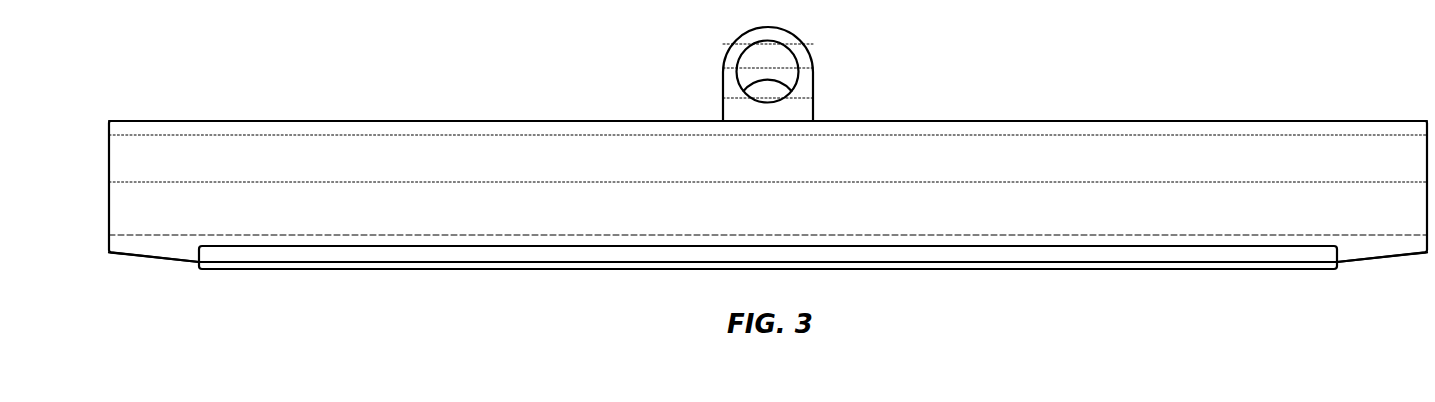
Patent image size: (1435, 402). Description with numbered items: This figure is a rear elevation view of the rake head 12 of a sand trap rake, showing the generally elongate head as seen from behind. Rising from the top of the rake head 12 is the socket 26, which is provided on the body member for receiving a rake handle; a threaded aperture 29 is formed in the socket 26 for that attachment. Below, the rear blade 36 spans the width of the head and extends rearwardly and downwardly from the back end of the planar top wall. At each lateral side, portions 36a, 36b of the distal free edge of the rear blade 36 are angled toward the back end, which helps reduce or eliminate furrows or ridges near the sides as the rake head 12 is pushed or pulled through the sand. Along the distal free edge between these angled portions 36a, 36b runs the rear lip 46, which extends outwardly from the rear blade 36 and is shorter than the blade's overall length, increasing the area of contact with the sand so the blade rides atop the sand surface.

The rake head 12 is at (191, 134).
The socket 26 is at (742, 36).
The threaded aperture 29 is at (786, 62).
The rear blade 36 is at (1357, 147).
The angled portion of rear blade distal free edge 36a is at (1380, 262).
The angled portion of rear blade distal free edge 36b is at (160, 257).
The rear lip 46 is at (432, 250).